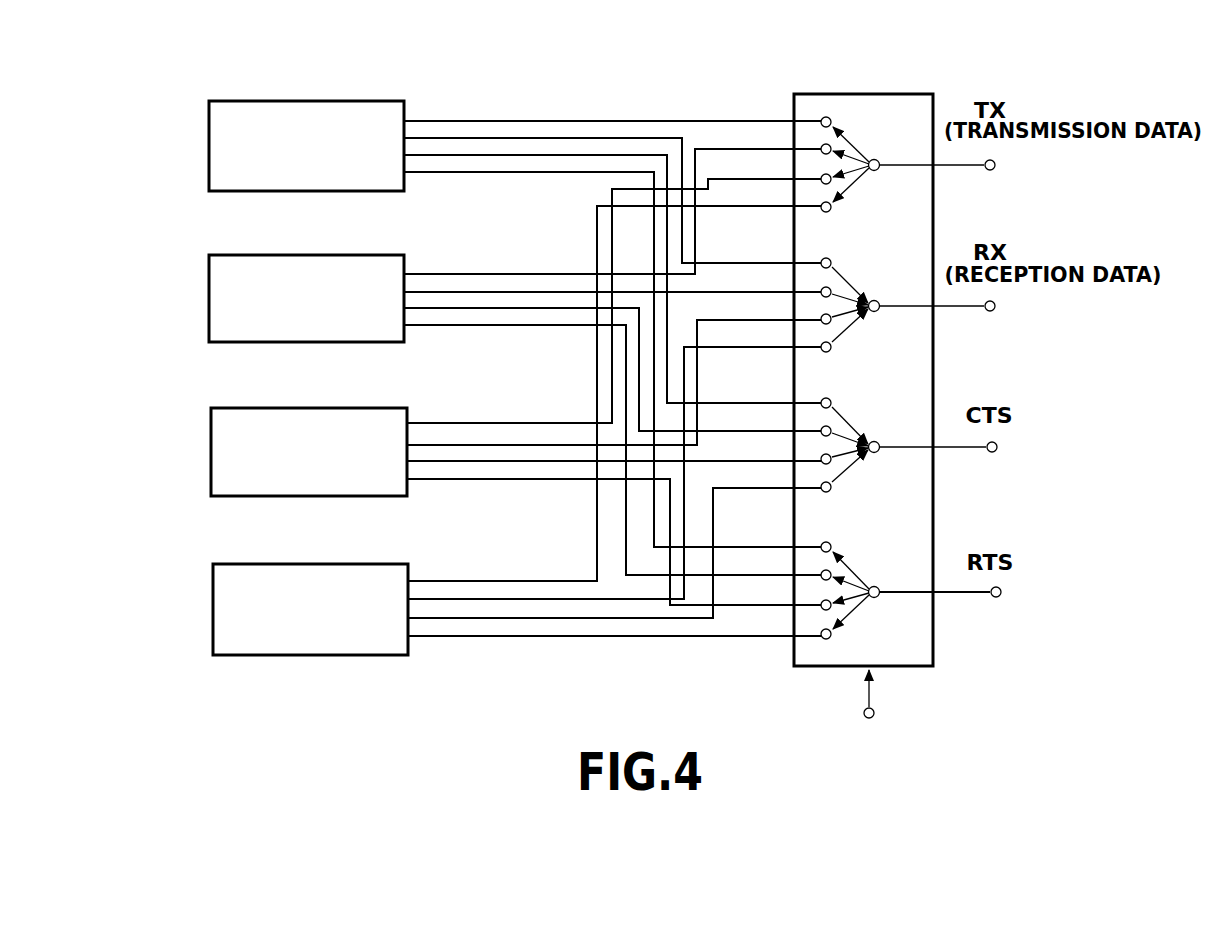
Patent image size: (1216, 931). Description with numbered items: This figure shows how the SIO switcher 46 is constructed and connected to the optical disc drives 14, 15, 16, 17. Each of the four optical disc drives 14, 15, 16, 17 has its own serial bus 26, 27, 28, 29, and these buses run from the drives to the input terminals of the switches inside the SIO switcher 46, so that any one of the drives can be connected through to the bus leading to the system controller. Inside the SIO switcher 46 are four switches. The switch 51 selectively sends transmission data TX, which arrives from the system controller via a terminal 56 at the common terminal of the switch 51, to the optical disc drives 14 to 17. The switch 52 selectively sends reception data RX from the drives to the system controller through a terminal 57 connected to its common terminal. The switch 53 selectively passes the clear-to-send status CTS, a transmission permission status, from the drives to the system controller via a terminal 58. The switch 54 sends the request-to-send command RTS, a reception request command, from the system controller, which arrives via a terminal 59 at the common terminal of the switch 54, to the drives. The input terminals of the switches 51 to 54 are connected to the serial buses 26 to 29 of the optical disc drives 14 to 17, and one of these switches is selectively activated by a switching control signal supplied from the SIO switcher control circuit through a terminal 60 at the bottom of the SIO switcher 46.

The optical disc drive 14 is at (367, 101).
The optical disc drive 15 is at (367, 255).
The optical disc drive 16 is at (368, 408).
The optical disc drive 17 is at (367, 564).
The RS-232C bus 26 is at (560, 106).
The RS-232C bus 27 is at (545, 264).
The RS-232C bus 28 is at (549, 420).
The RS-232C bus 29 is at (553, 576).
The SIO switcher 46 is at (820, 93).
The switch 51 is at (858, 150).
The switch 52 is at (856, 282).
The switch 53 is at (856, 427).
The switch 54 is at (856, 572).
The terminal 56 is at (991, 171).
The terminal 57 is at (991, 312).
The terminal 58 is at (994, 453).
The terminal 59 is at (998, 598).
The terminal 60 is at (868, 719).